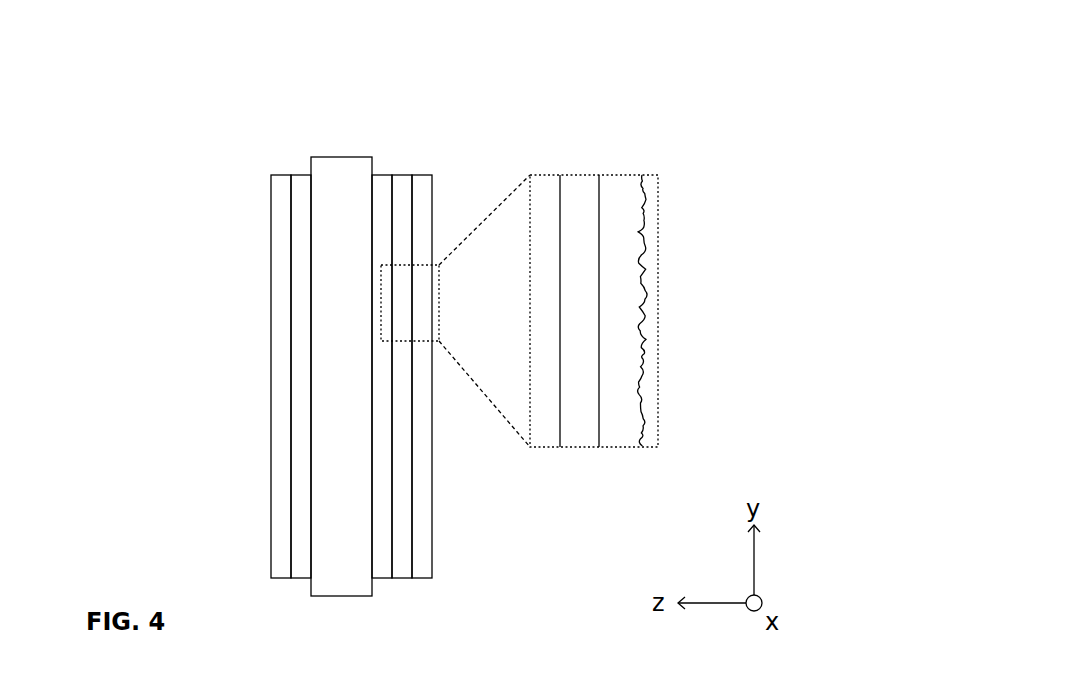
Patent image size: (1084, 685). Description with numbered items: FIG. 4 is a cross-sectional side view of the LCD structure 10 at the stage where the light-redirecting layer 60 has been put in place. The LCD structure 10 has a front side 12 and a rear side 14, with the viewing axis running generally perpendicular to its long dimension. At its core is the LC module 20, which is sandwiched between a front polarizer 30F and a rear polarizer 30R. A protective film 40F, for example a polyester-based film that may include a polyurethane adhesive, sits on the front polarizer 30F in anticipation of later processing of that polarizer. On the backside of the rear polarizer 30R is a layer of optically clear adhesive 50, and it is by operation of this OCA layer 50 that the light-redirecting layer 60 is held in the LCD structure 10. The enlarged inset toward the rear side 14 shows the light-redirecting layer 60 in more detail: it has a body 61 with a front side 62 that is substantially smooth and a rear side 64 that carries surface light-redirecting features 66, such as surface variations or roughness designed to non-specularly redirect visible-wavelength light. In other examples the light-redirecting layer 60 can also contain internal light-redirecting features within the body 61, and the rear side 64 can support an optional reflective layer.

The LCD structure 10 is at (216, 73).
The front side 12 is at (160, 241).
The rear side 14 is at (741, 259).
The LC module 20 is at (340, 157).
The front polarizer 30F is at (301, 175).
The rear polarizer 30R is at (380, 175).
The protective film 40F is at (282, 175).
The optically clear adhesive layer 50 is at (404, 175).
The light-redirecting layer 60 is at (423, 175).
The body 61 is at (625, 222).
The front side 62 is at (412, 578).
The rear side 64 is at (432, 578).
The surface light-redirecting features 66 is at (642, 318).